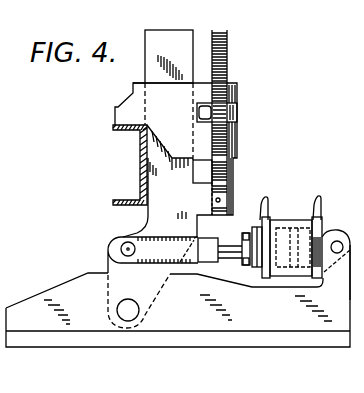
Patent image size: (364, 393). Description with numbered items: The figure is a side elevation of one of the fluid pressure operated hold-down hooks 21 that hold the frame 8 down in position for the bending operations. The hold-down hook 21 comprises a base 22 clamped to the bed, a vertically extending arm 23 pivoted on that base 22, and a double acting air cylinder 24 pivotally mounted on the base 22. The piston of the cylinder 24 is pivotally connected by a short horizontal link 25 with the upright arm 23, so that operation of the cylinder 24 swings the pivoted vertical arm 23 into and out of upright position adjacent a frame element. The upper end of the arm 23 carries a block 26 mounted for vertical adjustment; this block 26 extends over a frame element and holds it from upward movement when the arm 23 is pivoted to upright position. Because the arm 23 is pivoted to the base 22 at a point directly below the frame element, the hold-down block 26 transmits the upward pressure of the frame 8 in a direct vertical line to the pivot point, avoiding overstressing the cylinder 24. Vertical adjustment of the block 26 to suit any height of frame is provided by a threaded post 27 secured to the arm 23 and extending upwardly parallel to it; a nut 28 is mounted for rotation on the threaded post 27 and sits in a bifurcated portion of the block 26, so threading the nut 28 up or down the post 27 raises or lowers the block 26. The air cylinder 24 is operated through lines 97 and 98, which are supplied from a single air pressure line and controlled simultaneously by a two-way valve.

The frame 8 is at (137, 165).
The hold-down hook 21 is at (264, 145).
The base 22 is at (76, 283).
The arm 23 is at (146, 219).
The double acting air cylinder 24 is at (301, 248).
The link 25 is at (208, 243).
The block 26 is at (126, 99).
The threaded post 27 is at (228, 60).
The nut 28 is at (239, 107).
The line 97 is at (325, 201).
The line 98 is at (267, 198).